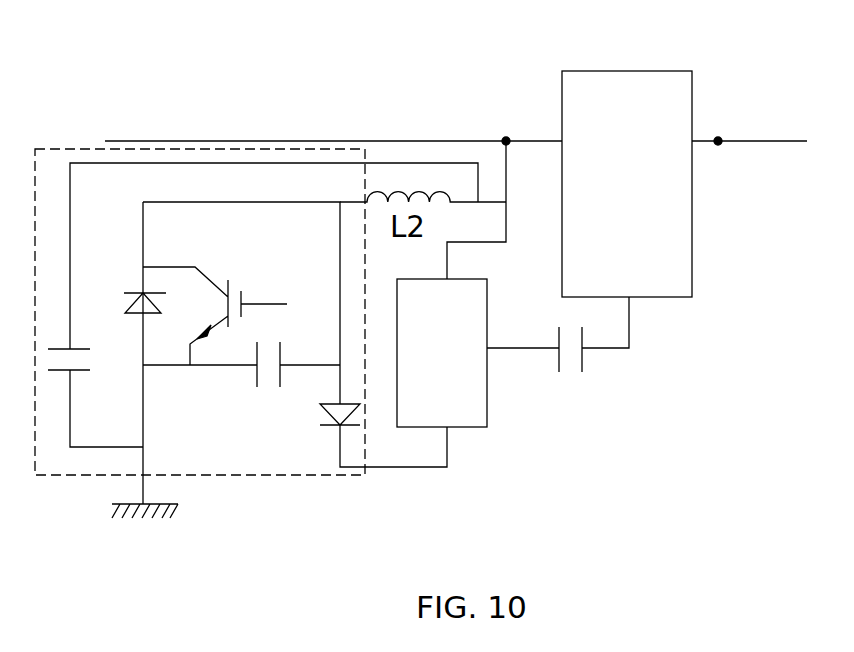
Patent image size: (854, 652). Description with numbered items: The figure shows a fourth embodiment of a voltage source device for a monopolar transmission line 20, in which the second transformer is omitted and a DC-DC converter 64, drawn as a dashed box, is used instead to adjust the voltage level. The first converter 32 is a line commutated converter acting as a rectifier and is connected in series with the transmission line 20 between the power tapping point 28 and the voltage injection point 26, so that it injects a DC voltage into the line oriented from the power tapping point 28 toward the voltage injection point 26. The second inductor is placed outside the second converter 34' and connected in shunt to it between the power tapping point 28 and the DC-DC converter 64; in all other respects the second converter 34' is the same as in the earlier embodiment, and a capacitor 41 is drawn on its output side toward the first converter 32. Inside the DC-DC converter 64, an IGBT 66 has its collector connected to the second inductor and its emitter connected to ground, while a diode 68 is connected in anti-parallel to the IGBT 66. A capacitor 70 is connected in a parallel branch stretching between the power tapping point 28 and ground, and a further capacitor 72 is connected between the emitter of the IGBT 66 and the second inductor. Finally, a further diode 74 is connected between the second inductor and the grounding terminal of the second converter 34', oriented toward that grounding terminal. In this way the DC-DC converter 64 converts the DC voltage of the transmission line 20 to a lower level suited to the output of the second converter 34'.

The transmission line 20 is at (392, 141).
The power tapping point 28 is at (506, 141).
The voltage injection point 26 is at (718, 141).
The first converter 32 is at (627, 184).
The second converter 34' is at (442, 353).
The capacitor 41 is at (558, 355).
The DC-DC converter 64 is at (305, 478).
The IGBT 66 is at (215, 304).
The diode 68 is at (124, 307).
The capacitor 70 is at (88, 366).
The further capacitor 72 is at (241, 382).
The further diode 74 is at (323, 424).